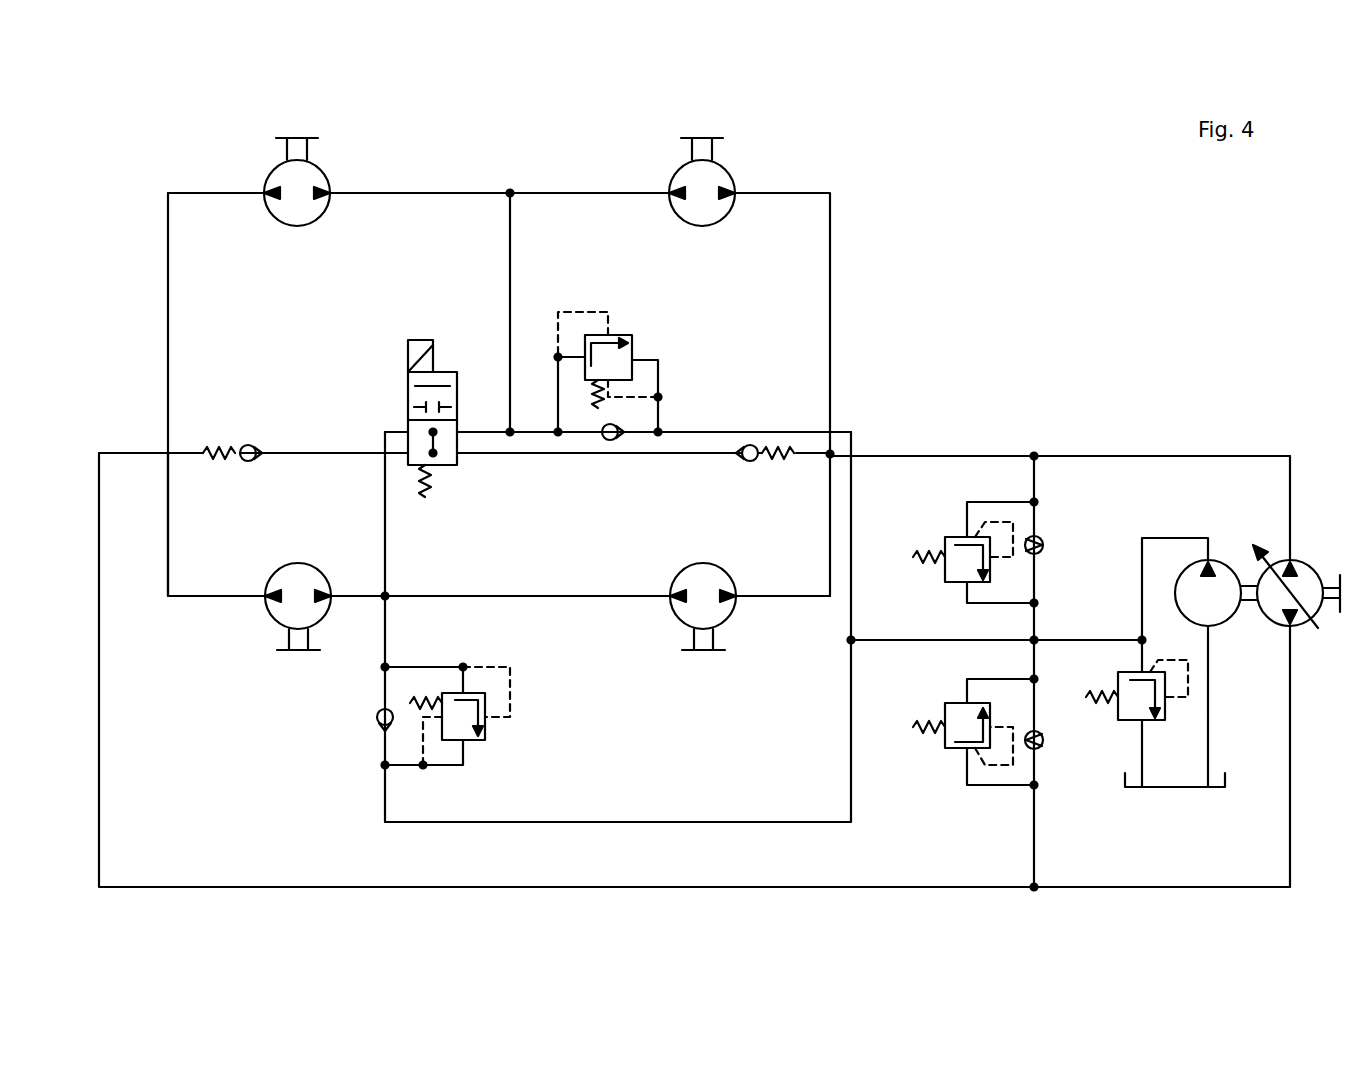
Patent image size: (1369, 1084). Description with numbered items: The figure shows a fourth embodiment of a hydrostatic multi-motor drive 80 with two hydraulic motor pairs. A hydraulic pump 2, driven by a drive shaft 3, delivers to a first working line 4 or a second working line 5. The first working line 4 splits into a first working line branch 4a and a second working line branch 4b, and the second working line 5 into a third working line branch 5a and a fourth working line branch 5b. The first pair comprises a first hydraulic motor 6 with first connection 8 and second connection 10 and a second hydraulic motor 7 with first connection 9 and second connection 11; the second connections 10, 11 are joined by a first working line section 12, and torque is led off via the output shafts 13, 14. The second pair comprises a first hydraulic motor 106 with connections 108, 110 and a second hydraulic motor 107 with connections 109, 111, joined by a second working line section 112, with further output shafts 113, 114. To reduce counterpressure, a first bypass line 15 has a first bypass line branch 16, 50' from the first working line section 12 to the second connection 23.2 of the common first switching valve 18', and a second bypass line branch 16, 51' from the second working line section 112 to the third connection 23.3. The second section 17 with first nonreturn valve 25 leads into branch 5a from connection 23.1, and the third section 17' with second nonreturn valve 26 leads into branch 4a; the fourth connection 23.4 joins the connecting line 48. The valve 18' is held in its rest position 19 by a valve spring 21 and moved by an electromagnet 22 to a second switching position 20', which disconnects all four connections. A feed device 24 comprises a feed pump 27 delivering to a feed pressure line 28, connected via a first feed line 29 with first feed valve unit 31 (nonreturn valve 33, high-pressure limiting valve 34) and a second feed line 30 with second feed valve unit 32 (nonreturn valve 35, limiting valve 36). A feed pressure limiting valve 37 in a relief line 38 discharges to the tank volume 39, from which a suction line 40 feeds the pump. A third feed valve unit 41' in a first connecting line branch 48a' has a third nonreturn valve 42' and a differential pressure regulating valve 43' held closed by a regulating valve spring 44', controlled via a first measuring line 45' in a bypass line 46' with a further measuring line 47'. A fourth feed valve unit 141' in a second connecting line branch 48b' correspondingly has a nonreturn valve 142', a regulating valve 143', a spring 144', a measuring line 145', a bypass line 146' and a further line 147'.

The hydraulic pump 2 is at (1305, 575).
The drive shaft 3 is at (1327, 606).
The first working line 4 is at (980, 455).
The first working line branch 4a is at (815, 600).
The second working line branch 4b is at (830, 262).
The second working line 5 is at (315, 886).
The third working line branch 5a is at (168, 540).
The fourth working line branch 5b is at (168, 350).
The first hydraulic motor 6 is at (714, 620).
The second hydraulic motor 7 is at (308, 615).
The first connection 8 is at (736, 599).
The first connection 9 is at (265, 600).
The second connection 10 is at (671, 599).
The second connection 11 is at (330, 599).
The first working line section 12 is at (548, 598).
The output shaft 13 is at (704, 655).
The output shaft 14 is at (299, 655).
The first bypass line 15 is at (308, 403).
The first bypass line branch 16, 50' is at (555, 436).
The second bypass line branch 16, 51' is at (560, 313).
The second section 17 is at (253, 425).
The third section 17' is at (873, 482).
The common first switching valve 18' is at (383, 389).
The rest position 19 is at (444, 464).
The second switching position 20' is at (393, 396).
The valve spring 21 is at (425, 500).
The electromagnet 22 is at (420, 344).
The first connection 23.1 is at (407, 428).
The second connection 23.2 is at (407, 455).
The third connection 23.3 is at (458, 458).
The fourth connection 23.4 is at (457, 420).
The feed device 24 is at (1200, 490).
The first spring-loaded nonreturn valve 25 is at (246, 462).
The second spring-loaded nonreturn valve 26 is at (752, 462).
The feed pump 27 is at (1215, 606).
The feed pressure line 28 is at (1175, 538).
The first feed line 29 is at (1037, 478).
The second feed line 30 is at (1037, 838).
The first feed valve unit 31 is at (942, 578).
The second feed valve unit 32 is at (944, 768).
The nonreturn valve 33 is at (1044, 545).
The first high-pressure limiting valve 34 is at (950, 546).
The second nonreturn valve 35 is at (1044, 743).
The second high-pressure limiting valve 36 is at (948, 740).
The feed pressure limiting valve 37 is at (1118, 720).
The relief line 38 is at (1146, 755).
The tank volume 39 is at (1219, 790).
The suction line 40 is at (1212, 720).
The third feed valve unit 41' is at (451, 742).
The third nonreturn valve 42' is at (360, 727).
The differential pressure regulating valve 43' is at (495, 724).
The regulating valve spring 44' is at (423, 666).
The first measuring line 45' is at (478, 691).
The bypass line 46' is at (456, 762).
The control line 47' is at (437, 764).
The connecting line 48 is at (888, 643).
The first connecting line branch 48a' is at (618, 731).
The second connecting line branch 48b' is at (865, 508).
The hydraulic circuit 80 is at (1170, 328).
The first hydraulic motor 106 is at (712, 182).
The second hydraulic motor 107 is at (306, 182).
The first connection 108 is at (736, 190).
The first connection 109 is at (265, 190).
The second connection 110 is at (670, 190).
The second connection 111 is at (328, 190).
The second working line section 112 is at (415, 192).
The output shaft 113 is at (702, 150).
The output shaft 114 is at (297, 150).
The fourth feed valve unit 141' is at (668, 380).
The check valve 142' is at (619, 459).
The pressure valve 143' is at (639, 354).
The spring 144' is at (577, 437).
The control line 145' is at (622, 365).
The line 146' is at (678, 390).
The control line 147' is at (666, 387).